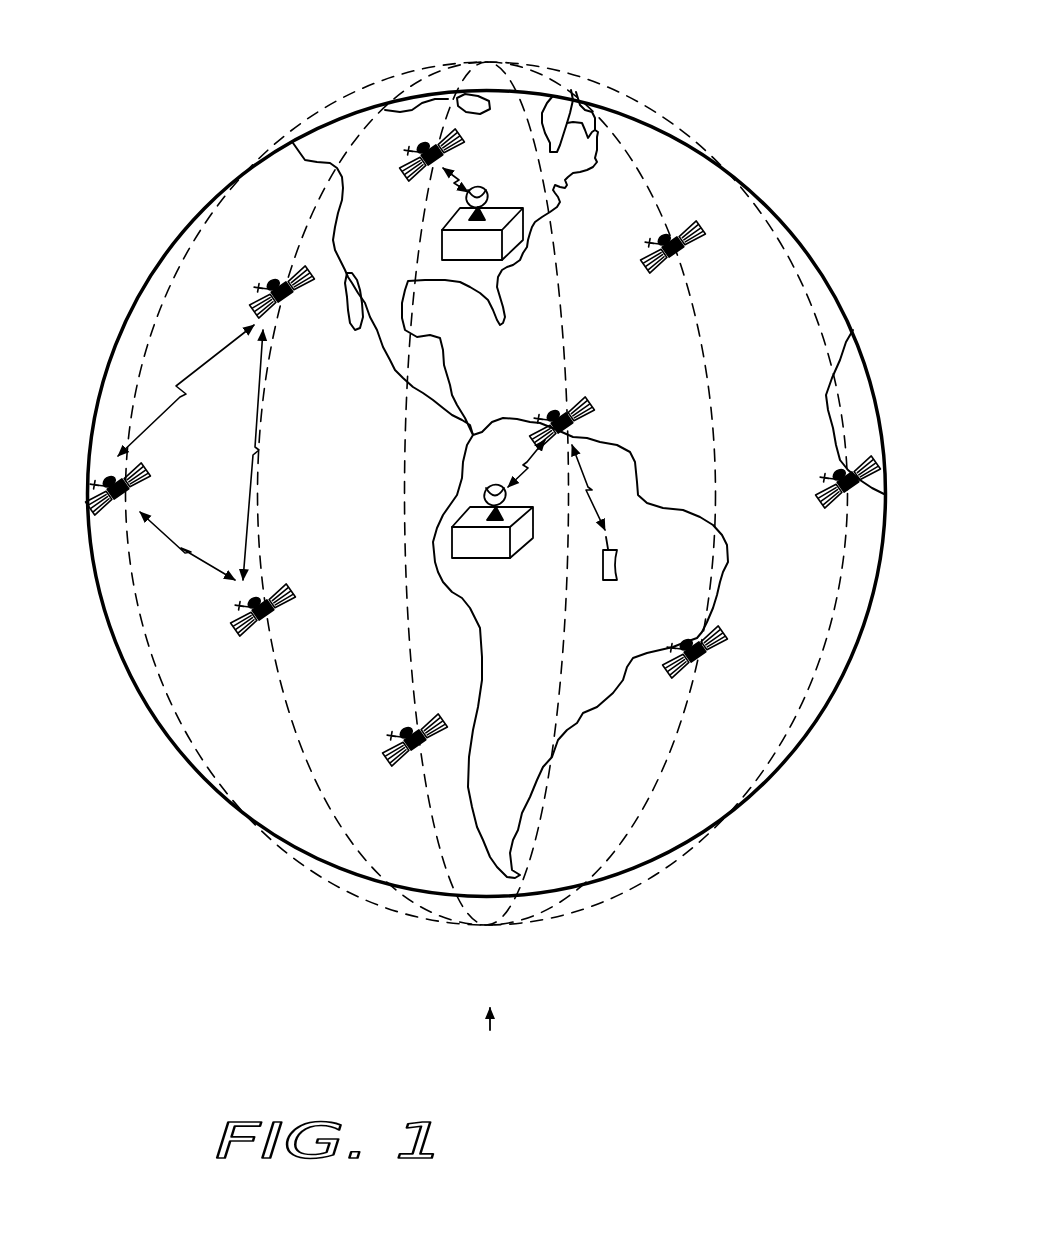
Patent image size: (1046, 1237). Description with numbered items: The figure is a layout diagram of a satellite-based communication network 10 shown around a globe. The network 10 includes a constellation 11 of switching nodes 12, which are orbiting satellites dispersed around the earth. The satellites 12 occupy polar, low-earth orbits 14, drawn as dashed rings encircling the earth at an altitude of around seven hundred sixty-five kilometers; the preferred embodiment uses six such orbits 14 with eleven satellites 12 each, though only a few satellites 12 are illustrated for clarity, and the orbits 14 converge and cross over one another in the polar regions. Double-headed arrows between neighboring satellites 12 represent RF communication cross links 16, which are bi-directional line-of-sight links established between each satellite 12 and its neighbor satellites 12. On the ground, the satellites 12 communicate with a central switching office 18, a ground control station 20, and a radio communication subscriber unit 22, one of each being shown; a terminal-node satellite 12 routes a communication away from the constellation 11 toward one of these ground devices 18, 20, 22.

The satellite-based communication network 10 is at (490, 1039).
The constellation 11 is at (490, 62).
The switching nodes 12 is at (420, 178).
The polar, low-earth orbits 14 is at (312, 221).
The communication links 16 is at (211, 370).
The central switching office 18 is at (496, 560).
The ground control station 20 is at (506, 206).
The radio communication subscriber unit 22 is at (616, 581).